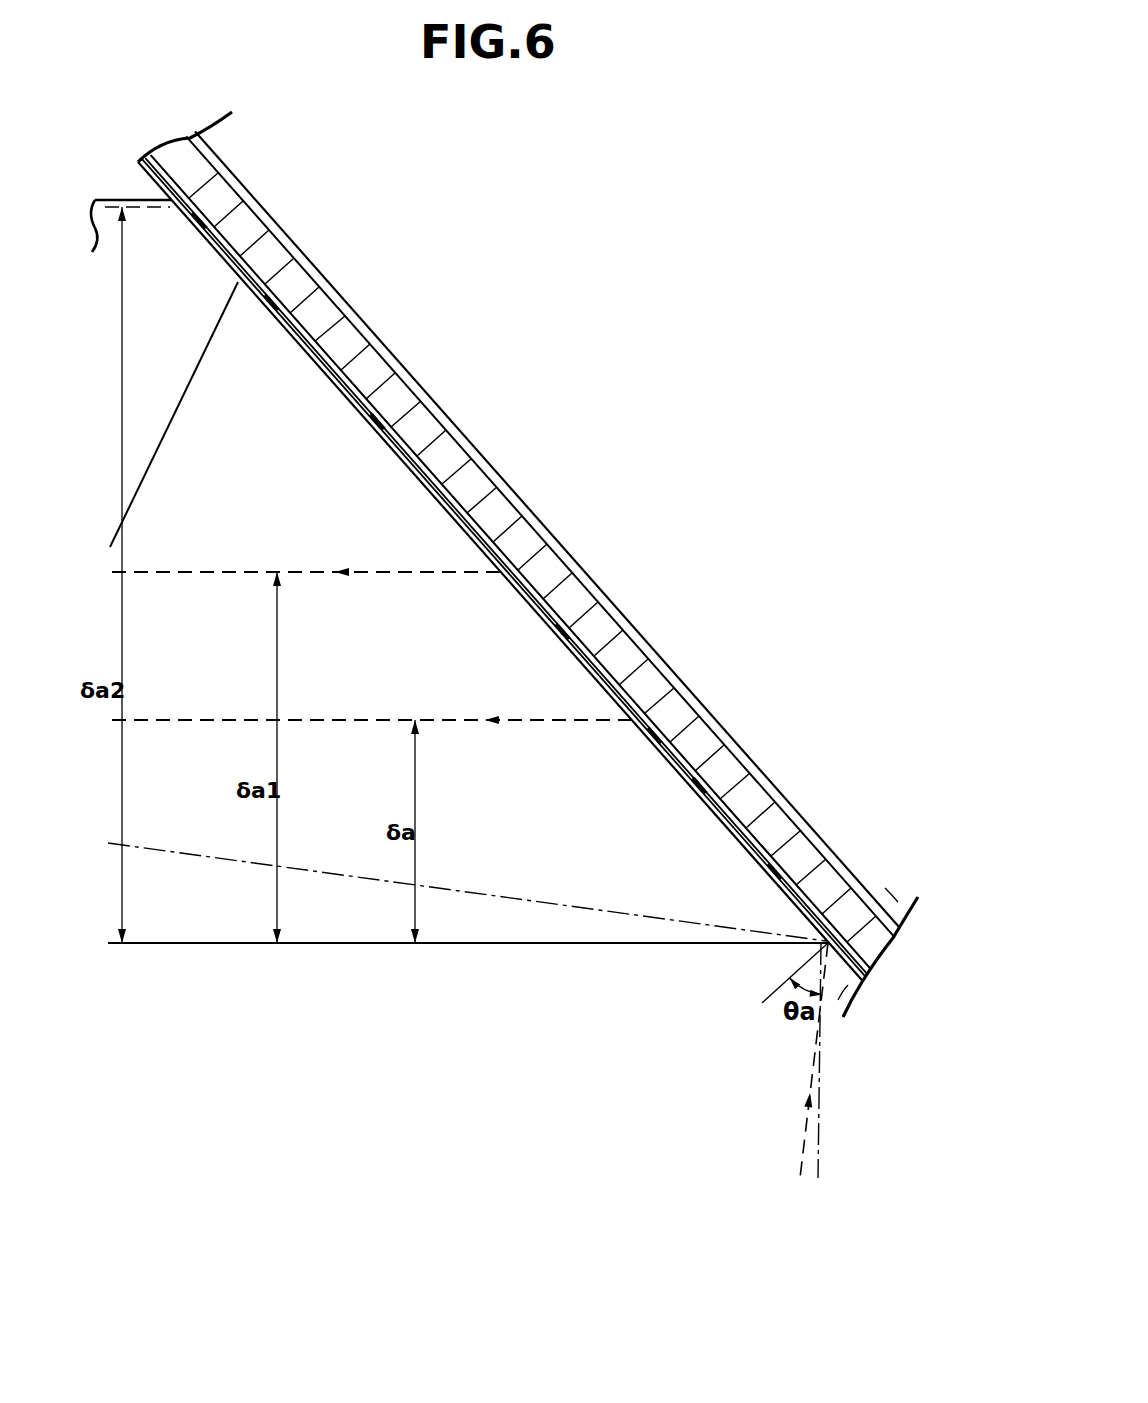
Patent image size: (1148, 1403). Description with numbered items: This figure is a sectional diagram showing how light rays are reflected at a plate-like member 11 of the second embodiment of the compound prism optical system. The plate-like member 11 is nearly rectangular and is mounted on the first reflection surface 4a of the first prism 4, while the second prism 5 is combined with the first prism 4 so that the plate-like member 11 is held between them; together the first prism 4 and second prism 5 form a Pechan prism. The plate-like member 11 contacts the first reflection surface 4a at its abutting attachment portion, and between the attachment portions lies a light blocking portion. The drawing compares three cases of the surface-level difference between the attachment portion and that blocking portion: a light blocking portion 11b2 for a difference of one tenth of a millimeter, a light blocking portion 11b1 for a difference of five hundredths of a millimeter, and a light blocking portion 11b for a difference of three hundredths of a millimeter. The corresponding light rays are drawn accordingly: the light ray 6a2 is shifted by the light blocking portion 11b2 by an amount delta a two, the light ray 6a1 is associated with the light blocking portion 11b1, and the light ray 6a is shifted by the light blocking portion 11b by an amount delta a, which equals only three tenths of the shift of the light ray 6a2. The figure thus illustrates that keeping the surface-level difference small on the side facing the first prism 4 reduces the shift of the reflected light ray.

The plate-like member 11 is at (185, 173).
The light blocking portion 11b is at (507, 560).
The light blocking portion 11b1 is at (460, 510).
The light blocking portion 11b2 is at (370, 403).
The first reflection surface 4a is at (708, 805).
The first prism 4 is at (847, 988).
The second prism 5 is at (893, 893).
The light ray 6a is at (548, 728).
The light ray 6a1 is at (385, 578).
The light ray 6a2 is at (153, 208).